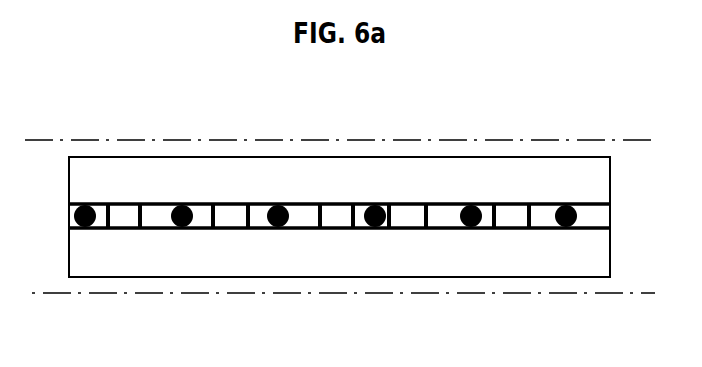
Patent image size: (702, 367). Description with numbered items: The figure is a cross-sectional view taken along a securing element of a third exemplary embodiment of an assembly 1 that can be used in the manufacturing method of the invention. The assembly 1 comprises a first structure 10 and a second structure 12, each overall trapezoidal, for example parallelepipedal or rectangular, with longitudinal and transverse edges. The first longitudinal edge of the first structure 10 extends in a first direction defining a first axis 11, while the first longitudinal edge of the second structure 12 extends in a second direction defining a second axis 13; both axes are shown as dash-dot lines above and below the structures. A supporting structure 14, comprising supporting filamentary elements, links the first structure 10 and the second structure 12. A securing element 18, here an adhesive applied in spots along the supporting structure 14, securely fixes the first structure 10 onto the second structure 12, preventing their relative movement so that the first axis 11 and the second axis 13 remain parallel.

The assembly 1 is at (523, 69).
The first structure 10 is at (340, 173).
The first axis 11 is at (593, 138).
The second structure 12 is at (340, 257).
The second axis 13 is at (591, 295).
The supporting structure 14 is at (108, 208).
The securing element 18 is at (78, 225).